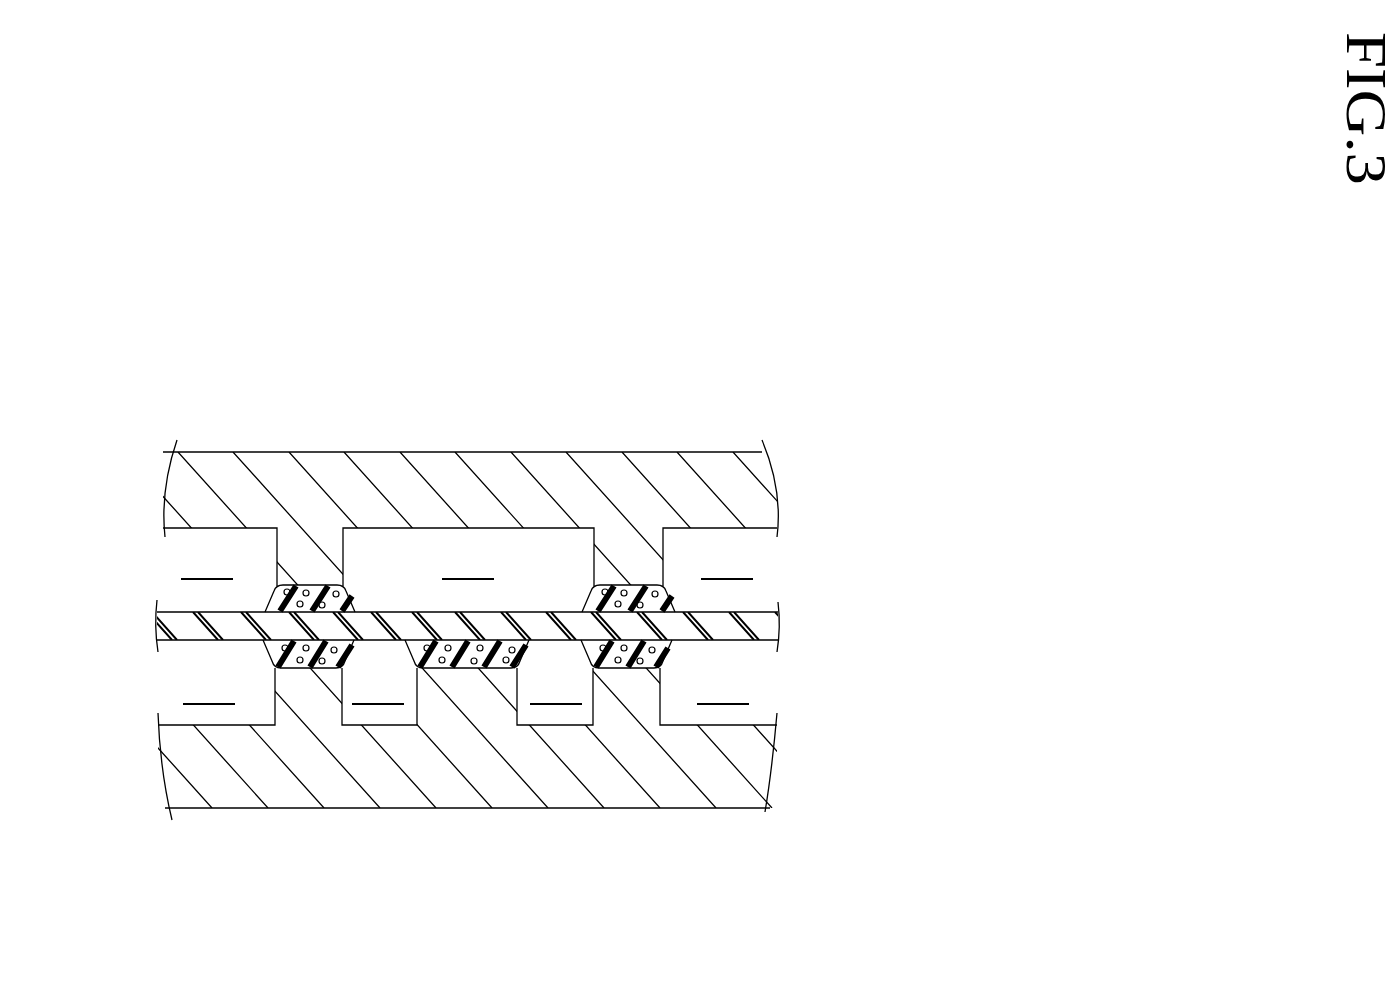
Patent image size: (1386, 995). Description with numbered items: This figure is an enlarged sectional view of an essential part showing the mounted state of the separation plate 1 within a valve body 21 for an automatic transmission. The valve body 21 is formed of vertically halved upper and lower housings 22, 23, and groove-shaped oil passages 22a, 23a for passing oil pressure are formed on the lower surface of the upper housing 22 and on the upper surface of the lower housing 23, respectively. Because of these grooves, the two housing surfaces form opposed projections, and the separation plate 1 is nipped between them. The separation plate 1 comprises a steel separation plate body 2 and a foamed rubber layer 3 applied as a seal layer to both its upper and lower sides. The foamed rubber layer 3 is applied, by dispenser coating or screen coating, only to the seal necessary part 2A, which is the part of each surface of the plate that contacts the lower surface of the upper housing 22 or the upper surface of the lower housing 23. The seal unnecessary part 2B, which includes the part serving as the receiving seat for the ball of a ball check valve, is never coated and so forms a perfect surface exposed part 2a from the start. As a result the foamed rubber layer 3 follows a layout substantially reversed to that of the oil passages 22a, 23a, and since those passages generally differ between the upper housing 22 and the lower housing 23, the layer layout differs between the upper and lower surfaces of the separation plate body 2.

The separation plate 1 is at (150, 617).
The separation plate body 2 is at (765, 626).
The seal necessary part 2A is at (330, 600).
The seal unnecessary part 2B is at (415, 620).
The surface exposed part 2a is at (520, 625).
The foamed rubber layer 3 is at (290, 595).
The valve body 21 is at (178, 452).
The upper housing 22 is at (742, 486).
The oil passages 22a is at (470, 557).
The lower housing 23 is at (750, 770).
The oil passages 23a is at (467, 696).